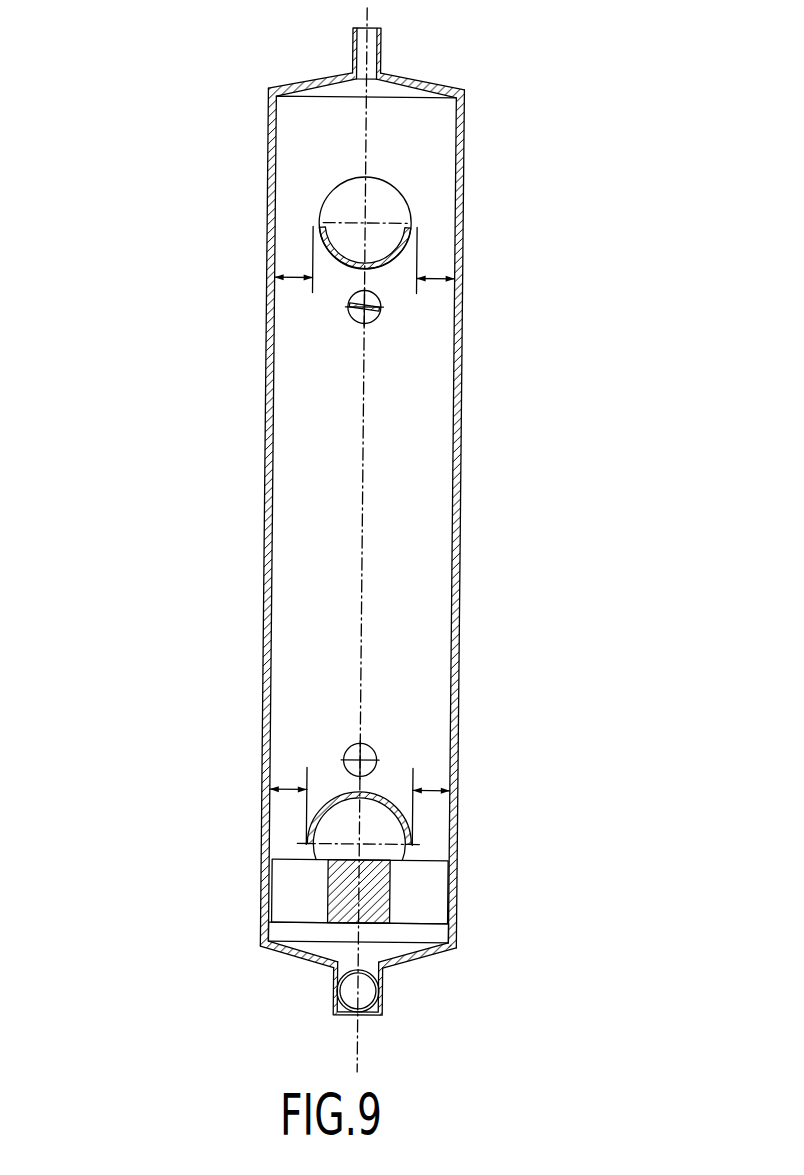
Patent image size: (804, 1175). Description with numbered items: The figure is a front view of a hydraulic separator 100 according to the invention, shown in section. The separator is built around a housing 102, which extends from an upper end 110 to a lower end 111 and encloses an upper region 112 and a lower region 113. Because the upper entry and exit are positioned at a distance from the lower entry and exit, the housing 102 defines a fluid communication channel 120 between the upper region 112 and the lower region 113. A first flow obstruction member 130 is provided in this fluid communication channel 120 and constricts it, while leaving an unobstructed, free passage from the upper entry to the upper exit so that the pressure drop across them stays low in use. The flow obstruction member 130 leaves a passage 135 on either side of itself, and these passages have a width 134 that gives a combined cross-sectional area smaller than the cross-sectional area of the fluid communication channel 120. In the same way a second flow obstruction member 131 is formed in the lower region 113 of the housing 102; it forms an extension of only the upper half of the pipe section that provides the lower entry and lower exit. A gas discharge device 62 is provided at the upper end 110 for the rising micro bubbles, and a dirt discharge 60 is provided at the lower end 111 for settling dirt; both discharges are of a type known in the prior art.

The hydraulic separator 100 is at (140, 284).
The housing 102 is at (459, 456).
The upper end 110 is at (292, 85).
The lower end 111 is at (272, 950).
The upper region 112 is at (140, 202).
The lower region 113 is at (138, 847).
The fluid communication channel 120 is at (337, 562).
The first flow obstruction member 130 is at (352, 272).
The flow obstruction member 131 is at (338, 795).
The width 134 is at (291, 275).
The passage 135 is at (292, 197).
The dirt discharge 60 is at (381, 1004).
The gas discharge device 62 is at (383, 51).